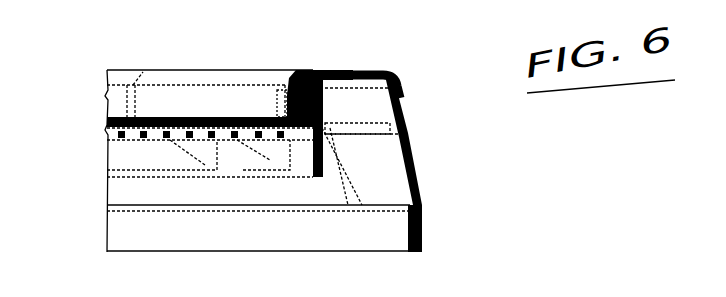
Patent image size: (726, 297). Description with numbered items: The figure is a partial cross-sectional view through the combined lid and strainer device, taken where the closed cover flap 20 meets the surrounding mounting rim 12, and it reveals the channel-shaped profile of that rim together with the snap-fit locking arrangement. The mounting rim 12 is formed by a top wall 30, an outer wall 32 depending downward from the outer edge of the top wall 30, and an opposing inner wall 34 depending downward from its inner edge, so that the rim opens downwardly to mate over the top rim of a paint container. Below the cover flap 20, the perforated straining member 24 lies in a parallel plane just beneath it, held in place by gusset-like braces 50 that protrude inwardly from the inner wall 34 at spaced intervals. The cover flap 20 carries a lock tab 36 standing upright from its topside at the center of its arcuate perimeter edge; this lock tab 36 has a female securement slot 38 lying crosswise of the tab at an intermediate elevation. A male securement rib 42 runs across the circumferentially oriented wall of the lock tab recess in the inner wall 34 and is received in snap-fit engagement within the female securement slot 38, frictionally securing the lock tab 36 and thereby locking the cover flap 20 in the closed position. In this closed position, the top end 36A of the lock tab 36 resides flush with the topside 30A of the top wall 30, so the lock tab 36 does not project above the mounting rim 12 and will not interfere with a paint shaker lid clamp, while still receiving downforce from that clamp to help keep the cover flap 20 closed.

The mounting rim 12 is at (416, 80).
The cover flap 20 is at (157, 119).
The straining member 24 is at (128, 146).
The top wall 30 is at (369, 71).
The topside 30A is at (351, 71).
The outer wall 32 is at (411, 134).
The inner wall 34 is at (311, 160).
The lock tab 36 is at (289, 80).
The top end 36A is at (303, 70).
The female securement slot 38 is at (325, 85).
The male securement rib 42 is at (282, 103).
The braces 50 is at (205, 163).